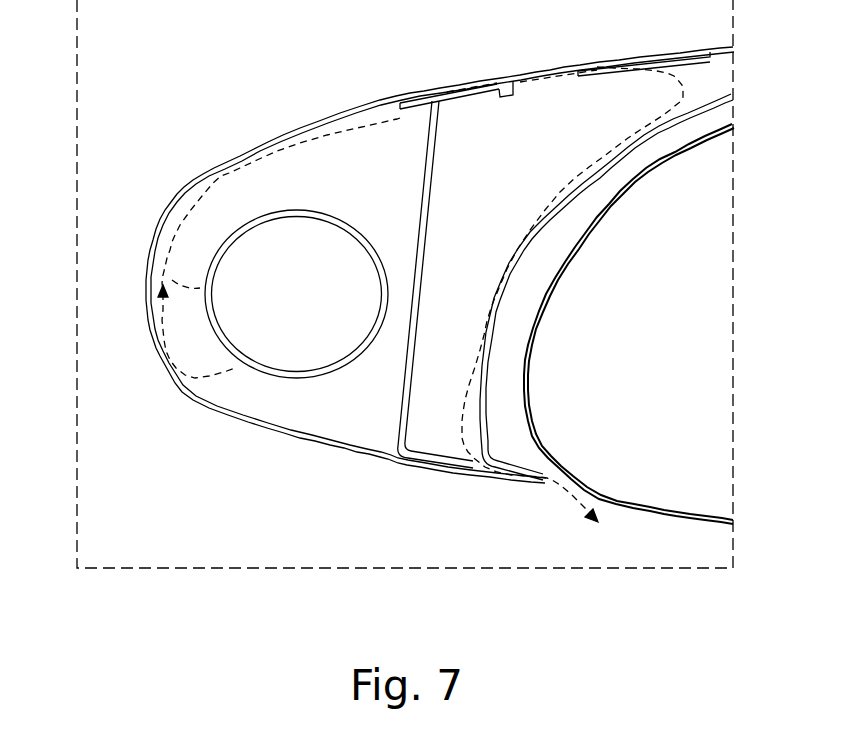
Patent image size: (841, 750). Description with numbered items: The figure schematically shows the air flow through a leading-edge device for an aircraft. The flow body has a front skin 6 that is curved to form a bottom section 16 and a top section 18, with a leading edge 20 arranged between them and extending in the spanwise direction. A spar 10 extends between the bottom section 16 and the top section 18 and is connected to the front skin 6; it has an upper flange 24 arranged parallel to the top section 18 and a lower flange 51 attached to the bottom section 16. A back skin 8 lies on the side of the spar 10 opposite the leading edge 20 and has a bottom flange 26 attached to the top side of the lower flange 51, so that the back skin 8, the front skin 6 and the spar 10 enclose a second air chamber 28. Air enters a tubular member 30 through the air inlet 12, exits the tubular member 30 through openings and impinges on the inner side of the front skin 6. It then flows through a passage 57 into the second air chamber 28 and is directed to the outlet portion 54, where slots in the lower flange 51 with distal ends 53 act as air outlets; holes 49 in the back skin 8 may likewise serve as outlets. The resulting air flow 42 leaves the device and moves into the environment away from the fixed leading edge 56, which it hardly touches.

The front skin 6 is at (216, 170).
The back skin 8 is at (613, 163).
The spar 10 is at (435, 154).
The air inlet 12 is at (297, 295).
The bottom section 16 is at (327, 425).
The top section 18 is at (311, 145).
The leading edge 20 is at (371, 265).
The upper flange 24 is at (497, 79).
The bottom flange 26 is at (520, 467).
The second air chamber 28 is at (600, 93).
The tubular member 30 is at (328, 217).
The air flow 42 is at (492, 306).
The holes 49 is at (262, 120).
The lower flange 51 is at (433, 463).
The distal ends 53 is at (549, 473).
The outlet portion 54 is at (510, 440).
The fixed leading edge 56 is at (622, 498).
The passage 57 is at (458, 90).